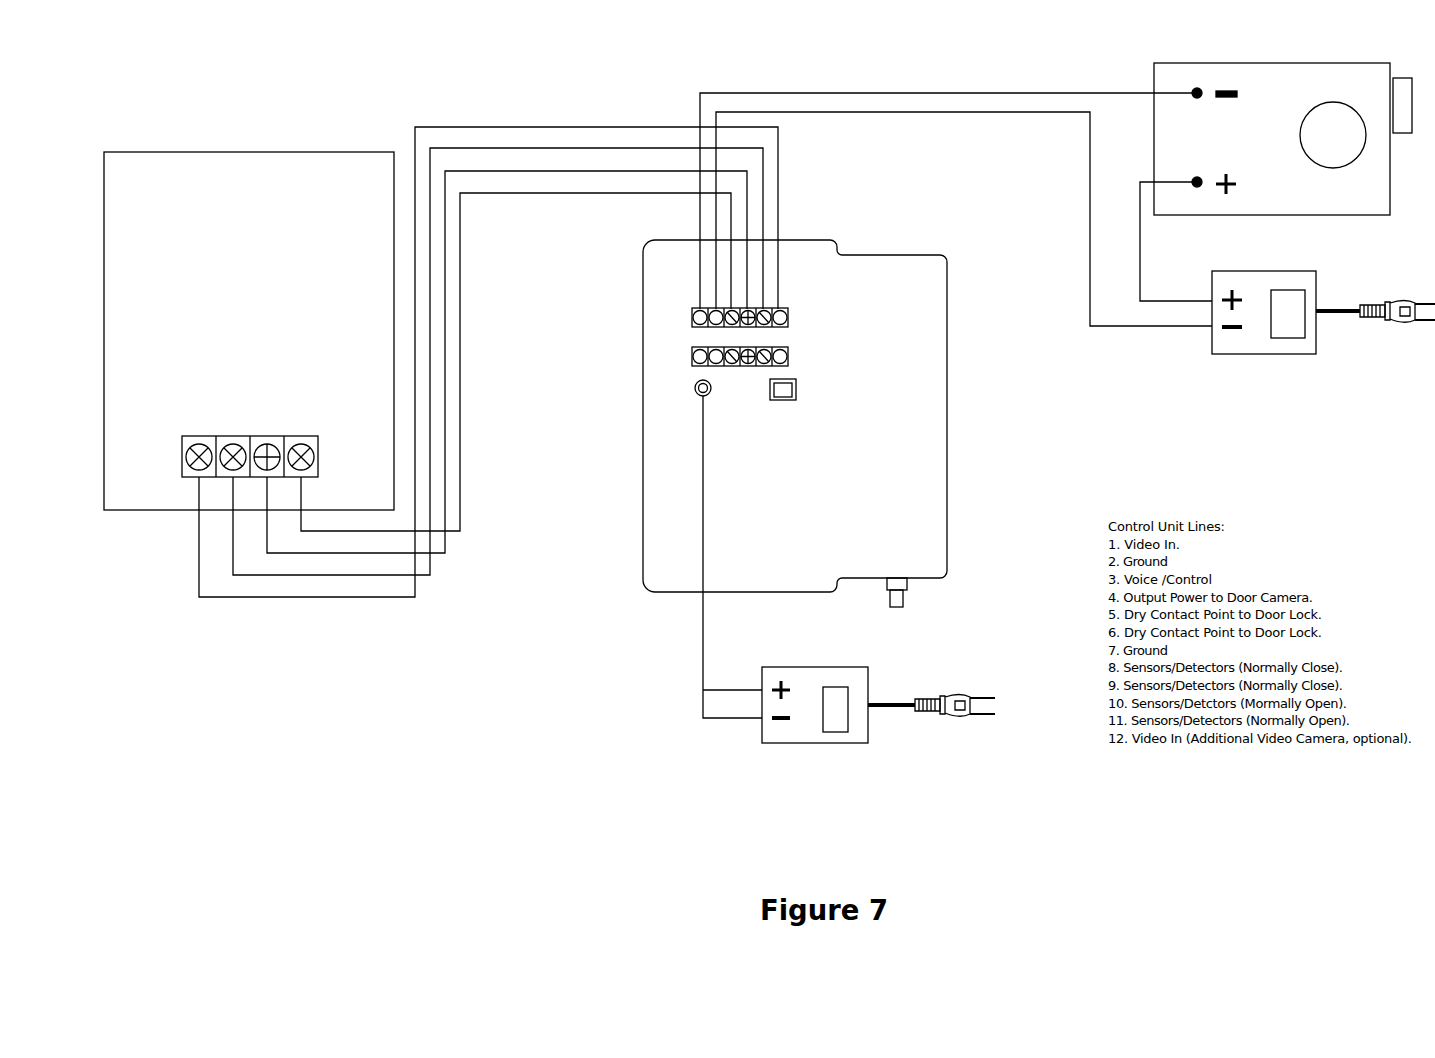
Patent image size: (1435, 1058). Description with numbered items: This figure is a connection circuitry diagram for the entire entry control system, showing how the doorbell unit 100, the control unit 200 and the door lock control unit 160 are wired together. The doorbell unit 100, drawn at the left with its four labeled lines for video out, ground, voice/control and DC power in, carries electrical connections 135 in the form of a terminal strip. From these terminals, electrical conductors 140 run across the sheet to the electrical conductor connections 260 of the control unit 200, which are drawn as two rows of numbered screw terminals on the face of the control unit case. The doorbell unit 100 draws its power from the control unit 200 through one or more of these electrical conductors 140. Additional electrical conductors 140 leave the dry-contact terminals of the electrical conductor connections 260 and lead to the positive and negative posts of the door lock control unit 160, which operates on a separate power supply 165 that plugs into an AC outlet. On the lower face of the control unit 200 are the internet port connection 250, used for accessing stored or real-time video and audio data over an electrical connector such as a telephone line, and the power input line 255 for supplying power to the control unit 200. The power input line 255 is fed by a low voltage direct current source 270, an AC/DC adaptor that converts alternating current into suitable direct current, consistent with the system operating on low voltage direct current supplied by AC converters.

The doorbell unit 100 is at (252, 150).
The electrical connections 135 is at (180, 466).
The electrical conductors 140 is at (418, 345).
The door lock control unit 160 is at (1185, 58).
The power supply 165 is at (1312, 351).
The control unit 200 is at (922, 243).
The internet port connection 250 is at (800, 427).
The power input line 255 is at (715, 549).
The electrical conductor connections 260 is at (792, 310).
The low voltage direct current source 270 is at (873, 752).